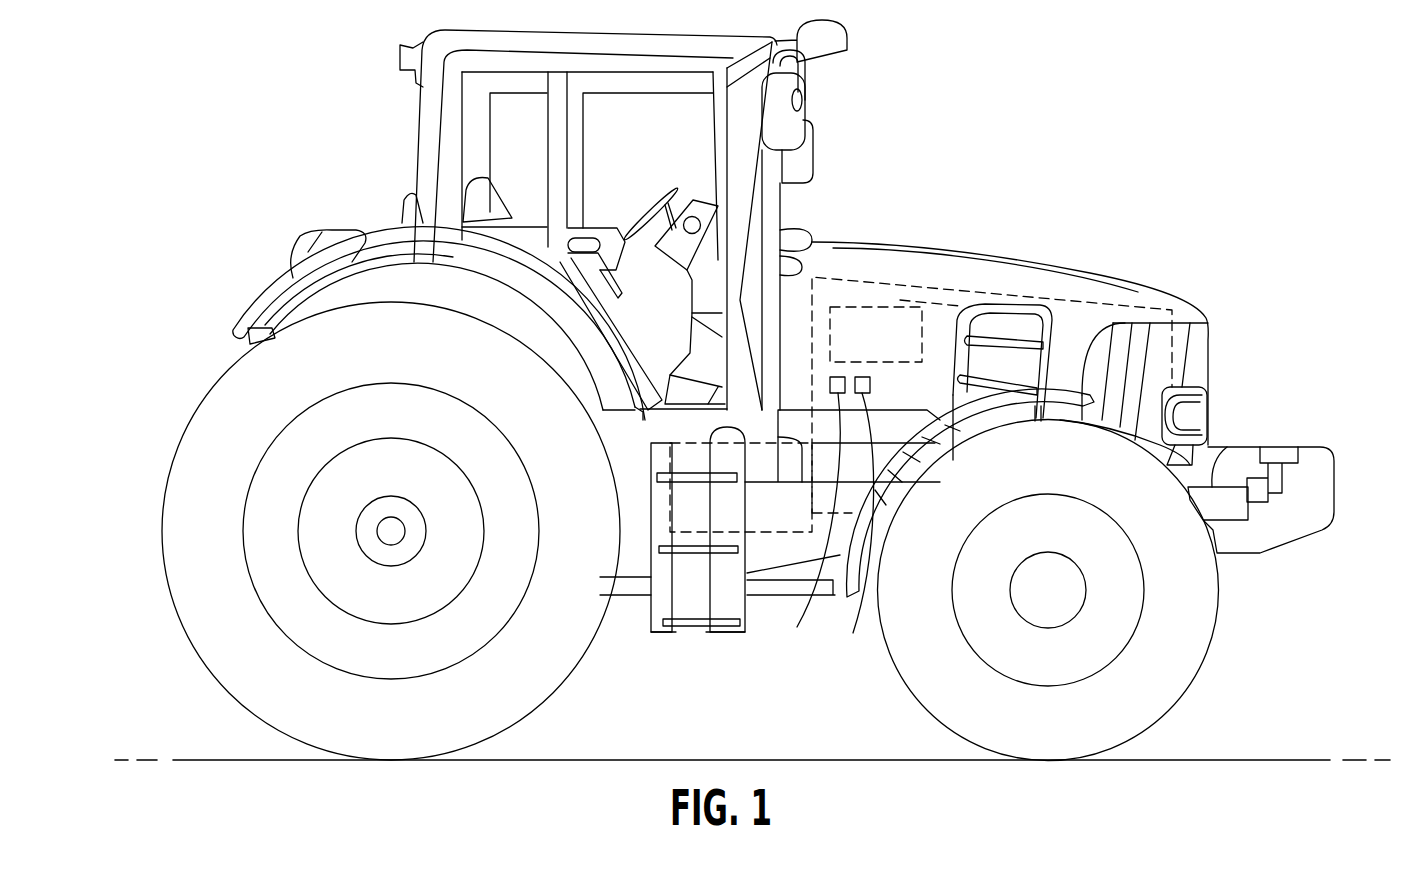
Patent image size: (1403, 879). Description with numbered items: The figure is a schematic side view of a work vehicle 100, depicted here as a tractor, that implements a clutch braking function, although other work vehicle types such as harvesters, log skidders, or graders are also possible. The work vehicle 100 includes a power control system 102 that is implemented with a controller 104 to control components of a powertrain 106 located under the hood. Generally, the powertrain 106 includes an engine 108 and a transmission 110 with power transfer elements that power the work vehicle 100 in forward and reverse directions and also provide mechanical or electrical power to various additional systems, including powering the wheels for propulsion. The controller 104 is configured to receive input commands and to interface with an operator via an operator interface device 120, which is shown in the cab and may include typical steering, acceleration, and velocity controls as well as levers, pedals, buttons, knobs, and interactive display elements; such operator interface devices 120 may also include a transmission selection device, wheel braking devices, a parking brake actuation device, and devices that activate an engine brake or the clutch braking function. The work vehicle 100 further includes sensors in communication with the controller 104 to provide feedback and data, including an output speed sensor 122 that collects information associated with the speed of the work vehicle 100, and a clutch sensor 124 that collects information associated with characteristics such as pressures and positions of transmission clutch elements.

The work vehicle 100 is at (316, 178).
The power control system 102 is at (1129, 266).
The controller 104 is at (876, 307).
The powertrain 106 is at (993, 288).
The engine 108 is at (952, 312).
The transmission 110 is at (777, 534).
The operator interface device 120 is at (701, 204).
The output speed sensor 122 is at (812, 515).
The clutch sensor 124 is at (855, 518).